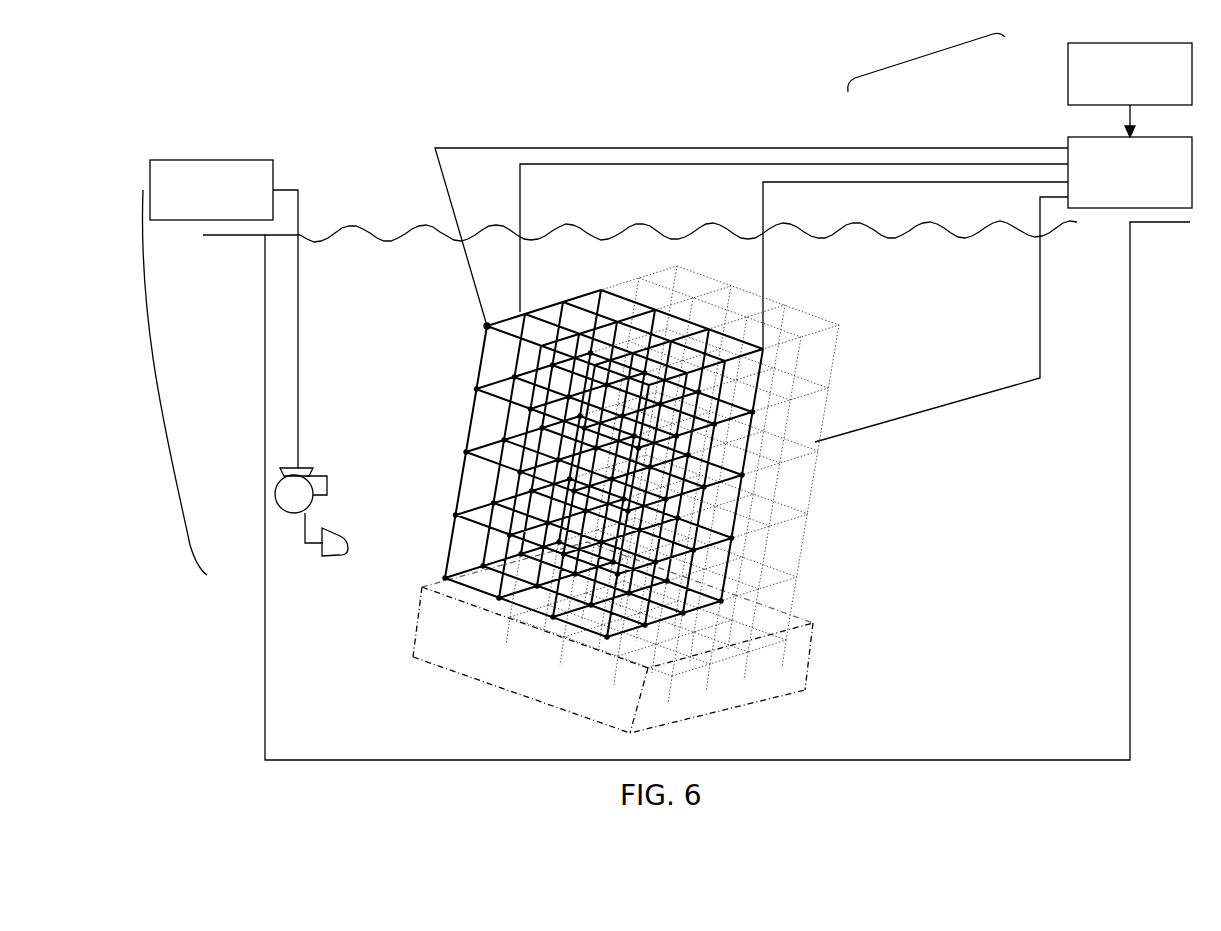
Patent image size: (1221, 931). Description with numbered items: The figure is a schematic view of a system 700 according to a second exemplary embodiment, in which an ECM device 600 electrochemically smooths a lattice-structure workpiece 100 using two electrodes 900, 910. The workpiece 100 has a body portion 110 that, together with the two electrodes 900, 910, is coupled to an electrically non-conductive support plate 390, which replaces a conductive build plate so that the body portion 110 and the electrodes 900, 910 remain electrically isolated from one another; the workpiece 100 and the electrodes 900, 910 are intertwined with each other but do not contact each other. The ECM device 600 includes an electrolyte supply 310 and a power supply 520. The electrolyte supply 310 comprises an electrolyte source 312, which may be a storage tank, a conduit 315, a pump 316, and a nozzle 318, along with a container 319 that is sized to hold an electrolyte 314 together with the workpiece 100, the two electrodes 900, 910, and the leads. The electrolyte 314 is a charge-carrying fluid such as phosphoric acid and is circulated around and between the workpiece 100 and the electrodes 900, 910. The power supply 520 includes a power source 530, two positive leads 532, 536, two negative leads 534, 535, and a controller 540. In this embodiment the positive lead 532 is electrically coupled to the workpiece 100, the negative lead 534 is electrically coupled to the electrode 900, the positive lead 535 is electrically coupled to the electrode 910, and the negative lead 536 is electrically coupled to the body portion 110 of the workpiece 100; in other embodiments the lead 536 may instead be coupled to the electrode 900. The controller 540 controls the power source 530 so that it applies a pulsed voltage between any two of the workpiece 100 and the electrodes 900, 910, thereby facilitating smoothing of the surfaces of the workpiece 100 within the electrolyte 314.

The system 700 is at (786, 44).
The ECM device 600 is at (385, 159).
The workpiece 100 is at (409, 283).
The body portion 110 is at (487, 326).
The electrode 900 is at (525, 314).
The electrode 910 is at (560, 292).
The support plate 390 is at (755, 682).
The electrolyte supply 310 is at (160, 387).
The electrolyte source 312 is at (212, 160).
The electrolyte 314 is at (1101, 458).
The conduit 315 is at (298, 323).
The pump 316 is at (275, 493).
The nozzle 318 is at (327, 556).
The container 319 is at (1130, 298).
The power supply 520 is at (928, 57).
The power source 530 is at (1068, 137).
The positive lead 532 is at (885, 148).
The negative lead 534 is at (925, 164).
The positive lead 535 is at (1040, 290).
The negative lead 536 is at (988, 182).
The controller 540 is at (1068, 72).